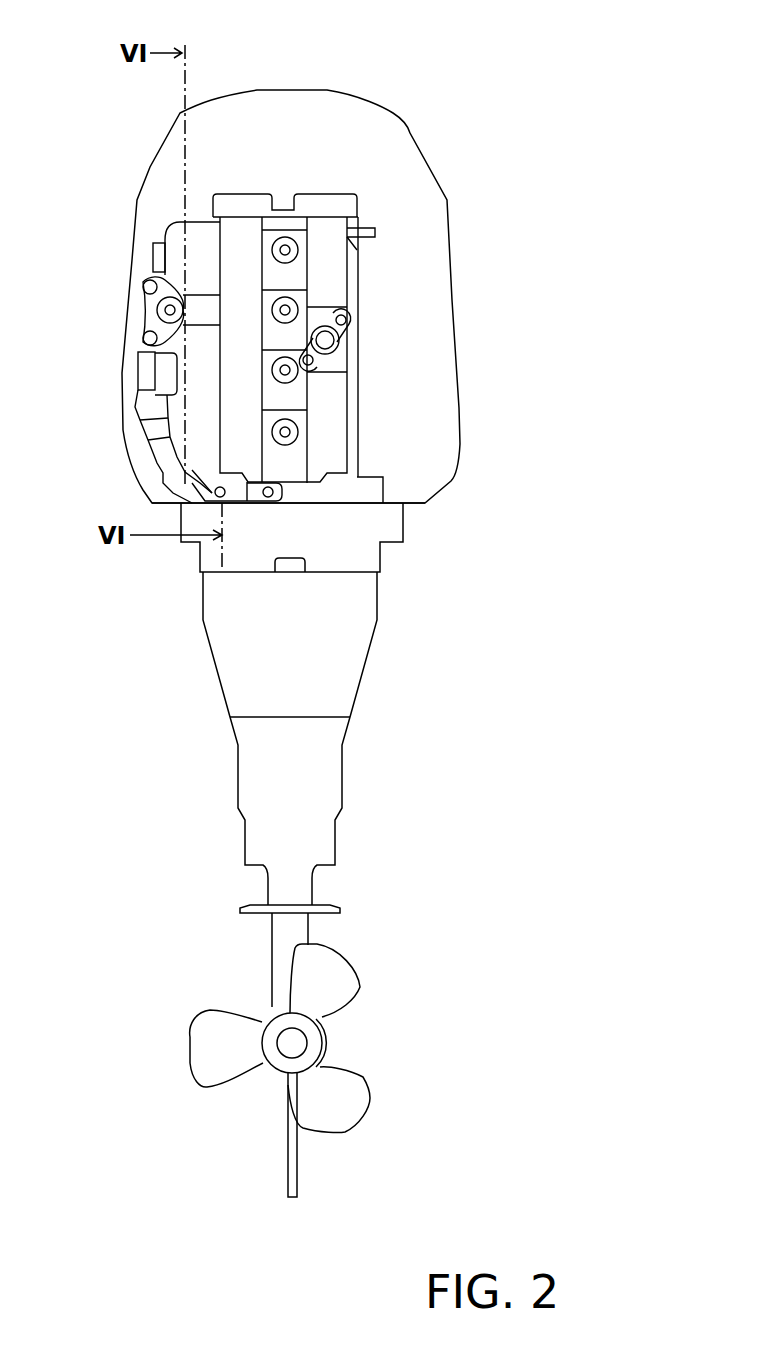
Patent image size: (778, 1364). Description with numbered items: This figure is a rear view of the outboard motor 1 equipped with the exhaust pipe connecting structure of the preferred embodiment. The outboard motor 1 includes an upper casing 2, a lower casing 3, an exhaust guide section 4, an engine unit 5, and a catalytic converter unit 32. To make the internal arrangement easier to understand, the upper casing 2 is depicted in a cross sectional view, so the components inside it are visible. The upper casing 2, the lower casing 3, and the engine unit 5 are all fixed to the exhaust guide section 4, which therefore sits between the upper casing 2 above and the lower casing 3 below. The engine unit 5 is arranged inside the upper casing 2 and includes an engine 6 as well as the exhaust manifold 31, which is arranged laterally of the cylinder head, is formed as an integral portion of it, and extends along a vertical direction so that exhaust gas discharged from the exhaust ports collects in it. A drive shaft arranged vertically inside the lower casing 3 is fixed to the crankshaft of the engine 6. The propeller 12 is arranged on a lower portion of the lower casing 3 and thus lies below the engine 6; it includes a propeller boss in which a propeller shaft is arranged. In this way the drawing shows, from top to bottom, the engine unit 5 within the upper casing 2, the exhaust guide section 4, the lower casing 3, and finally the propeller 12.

The outboard motor 1 is at (411, 73).
The upper casing 2 is at (417, 143).
The lower casing 3 is at (330, 650).
The exhaust guide section 4 is at (382, 519).
The engine unit 5 is at (246, 174).
The engine 6 is at (313, 193).
The propeller 12 is at (348, 1051).
The exhaust manifold 31 is at (177, 262).
The catalytic converter unit 32 is at (130, 436).